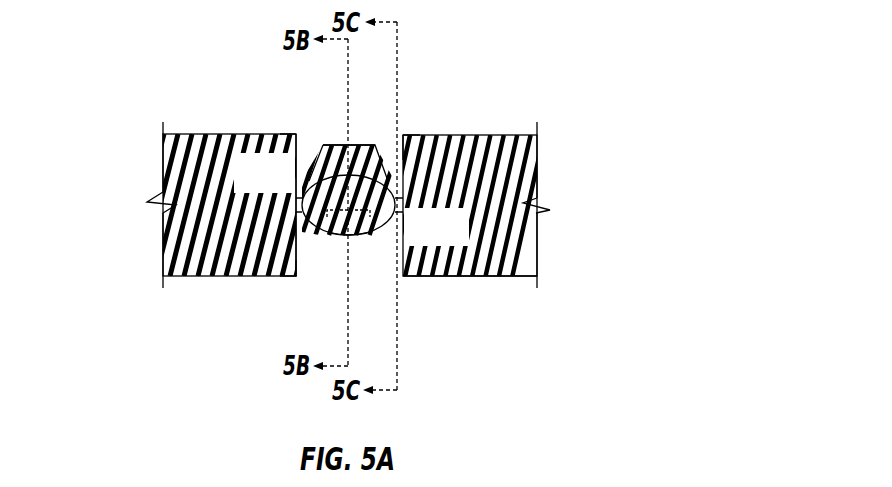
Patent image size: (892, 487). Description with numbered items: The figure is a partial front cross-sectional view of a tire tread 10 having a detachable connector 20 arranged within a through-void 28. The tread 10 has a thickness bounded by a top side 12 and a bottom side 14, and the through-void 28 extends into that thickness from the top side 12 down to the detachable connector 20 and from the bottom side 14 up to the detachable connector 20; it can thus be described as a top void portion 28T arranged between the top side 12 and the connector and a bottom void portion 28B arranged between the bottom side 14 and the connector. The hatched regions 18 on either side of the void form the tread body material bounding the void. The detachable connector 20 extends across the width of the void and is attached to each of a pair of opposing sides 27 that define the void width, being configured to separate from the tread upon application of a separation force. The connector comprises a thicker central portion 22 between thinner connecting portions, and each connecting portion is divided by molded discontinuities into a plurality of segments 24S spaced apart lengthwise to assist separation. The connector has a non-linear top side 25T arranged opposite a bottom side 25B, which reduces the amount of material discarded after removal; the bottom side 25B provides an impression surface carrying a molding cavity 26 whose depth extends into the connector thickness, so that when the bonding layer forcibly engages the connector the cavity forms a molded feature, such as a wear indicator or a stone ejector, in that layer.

The tread 10 is at (145, 55).
The top side 12 is at (346, 181).
The bottom side 14 is at (488, 277).
The substrate layer 18 is at (193, 136).
The detachable connector 20 is at (331, 173).
The central portion 22 is at (343, 145).
The segments 24S is at (419, 226).
The non-linear top side 25T is at (355, 145).
The bottom side 25B is at (336, 238).
The molding cavity 26 is at (353, 217).
The opposing sides 27 is at (292, 138).
The through-void 28 is at (310, 136).
The top void portion 28T is at (398, 157).
The bottom void portion 28B is at (295, 272).